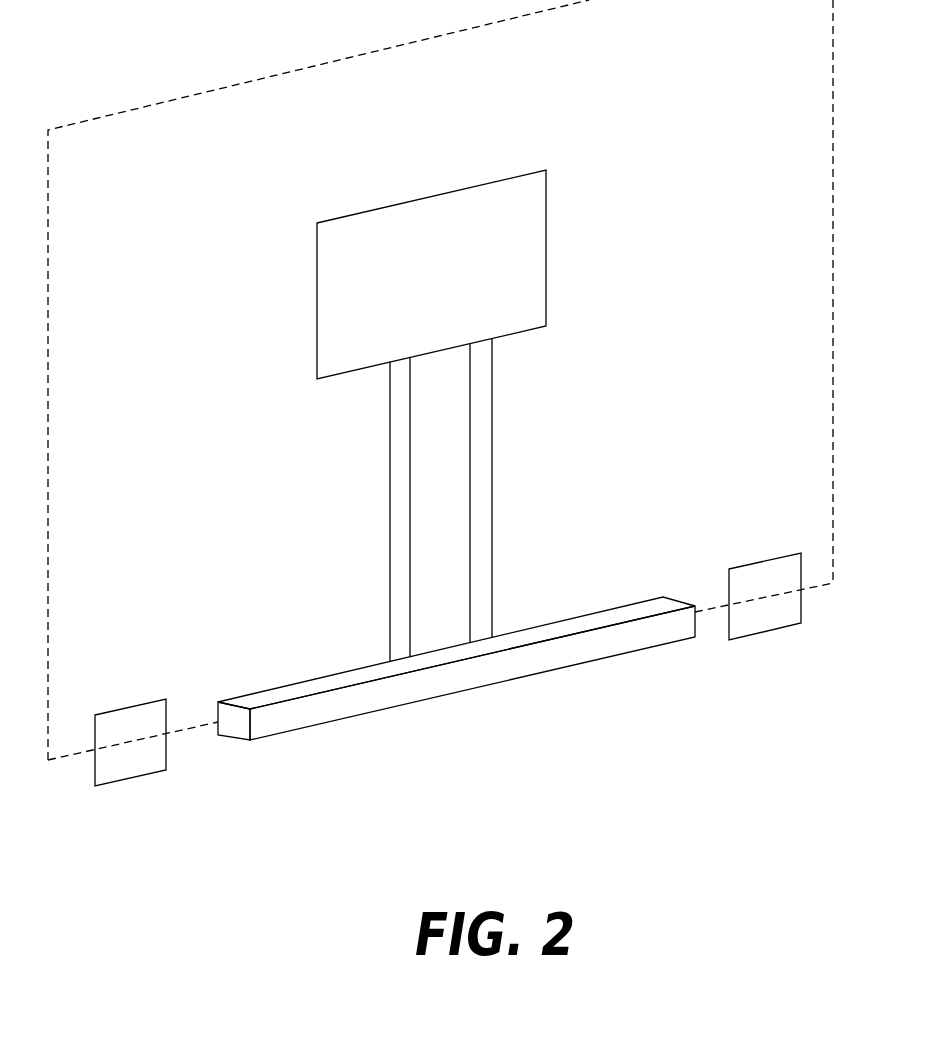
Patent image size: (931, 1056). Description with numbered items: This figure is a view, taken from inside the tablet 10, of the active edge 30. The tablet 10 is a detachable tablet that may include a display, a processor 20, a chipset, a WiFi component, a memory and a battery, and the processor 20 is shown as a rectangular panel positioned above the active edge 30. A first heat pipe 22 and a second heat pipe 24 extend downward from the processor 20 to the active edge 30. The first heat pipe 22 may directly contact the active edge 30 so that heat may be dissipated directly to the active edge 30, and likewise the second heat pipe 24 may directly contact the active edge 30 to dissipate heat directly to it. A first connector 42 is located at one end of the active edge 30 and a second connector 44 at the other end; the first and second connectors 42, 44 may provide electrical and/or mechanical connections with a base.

The tablet 10 is at (236, 88).
The processor 20 is at (533, 263).
The first heat pipe 22 is at (480, 456).
The second heat pipe 24 is at (400, 478).
The active edge 30 is at (485, 677).
The first connector 42 is at (138, 777).
The second connector 44 is at (763, 635).